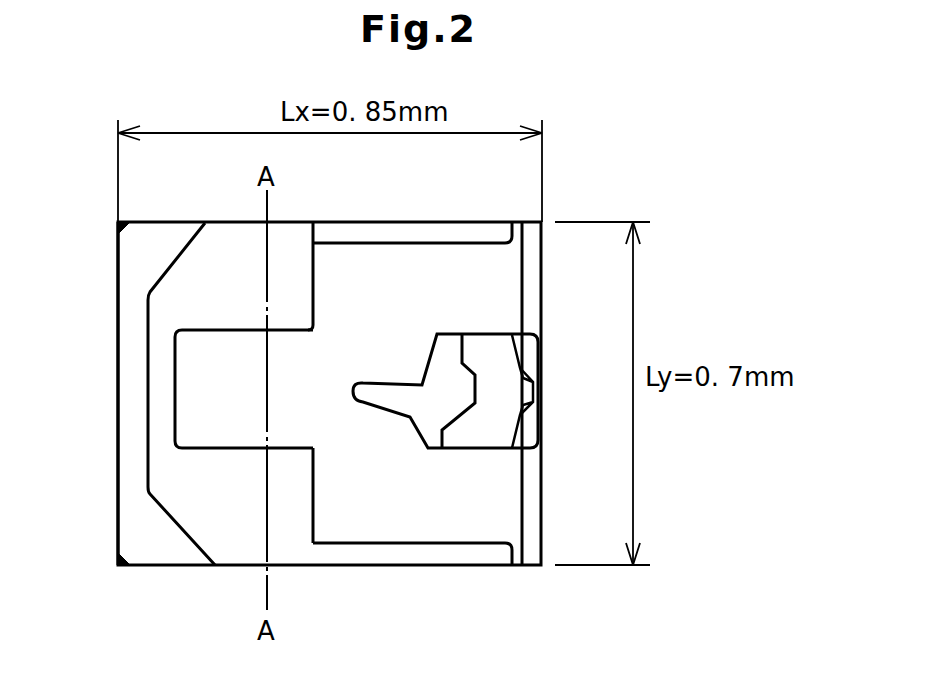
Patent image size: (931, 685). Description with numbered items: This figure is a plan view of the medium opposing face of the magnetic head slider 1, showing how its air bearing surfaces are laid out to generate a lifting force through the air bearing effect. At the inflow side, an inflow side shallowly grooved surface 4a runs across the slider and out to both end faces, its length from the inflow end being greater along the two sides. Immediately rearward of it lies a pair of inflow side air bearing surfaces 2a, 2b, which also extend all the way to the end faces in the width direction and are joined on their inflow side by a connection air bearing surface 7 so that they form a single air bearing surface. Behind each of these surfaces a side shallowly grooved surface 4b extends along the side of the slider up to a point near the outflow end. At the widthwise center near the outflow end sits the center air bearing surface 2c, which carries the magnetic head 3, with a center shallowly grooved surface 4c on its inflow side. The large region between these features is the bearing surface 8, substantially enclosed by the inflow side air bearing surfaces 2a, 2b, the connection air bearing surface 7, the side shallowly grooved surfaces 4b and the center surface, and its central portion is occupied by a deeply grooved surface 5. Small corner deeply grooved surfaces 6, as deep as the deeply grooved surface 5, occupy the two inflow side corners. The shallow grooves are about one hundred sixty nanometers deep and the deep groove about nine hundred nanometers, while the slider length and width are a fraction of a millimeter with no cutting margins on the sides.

The slider 1 is at (227, 552).
The inflow side air bearing surface 2a is at (202, 283).
The inflow side air bearing surface 2b is at (205, 488).
The center air bearing surface 2c is at (500, 372).
The magnetic head 3 is at (533, 392).
The inflow side shallowly grooved surface 4a is at (137, 398).
The side shallowly grooved surface 4b is at (362, 237).
The center shallowly grooved surface 4c is at (447, 390).
The deeply grooved surface 5 is at (378, 323).
The corner deeply grooved surface 6 is at (118, 221).
The connection air bearing surface 7 is at (165, 343).
The bearing surface 8 is at (287, 268).